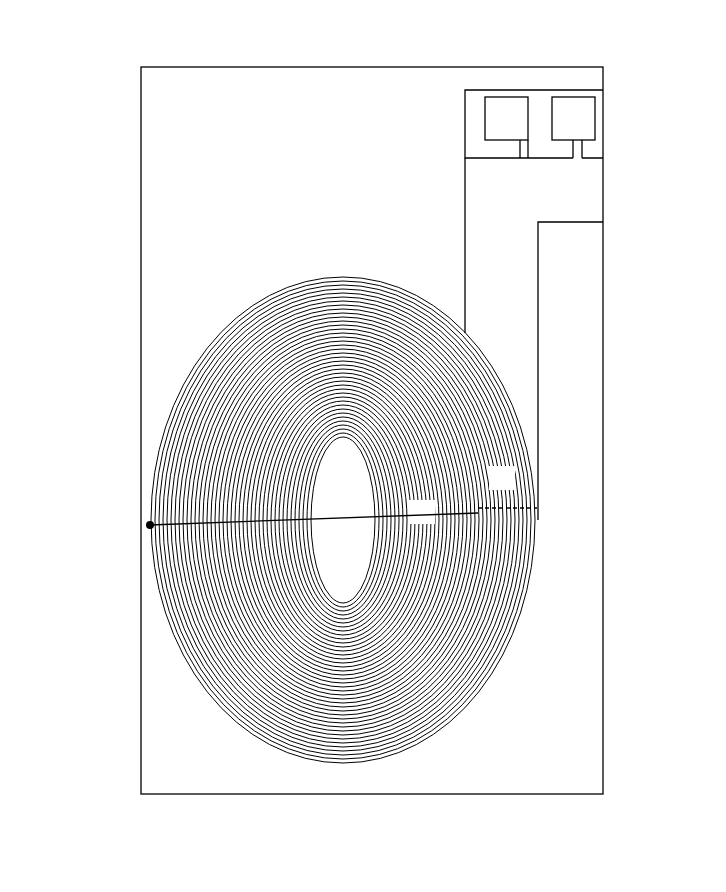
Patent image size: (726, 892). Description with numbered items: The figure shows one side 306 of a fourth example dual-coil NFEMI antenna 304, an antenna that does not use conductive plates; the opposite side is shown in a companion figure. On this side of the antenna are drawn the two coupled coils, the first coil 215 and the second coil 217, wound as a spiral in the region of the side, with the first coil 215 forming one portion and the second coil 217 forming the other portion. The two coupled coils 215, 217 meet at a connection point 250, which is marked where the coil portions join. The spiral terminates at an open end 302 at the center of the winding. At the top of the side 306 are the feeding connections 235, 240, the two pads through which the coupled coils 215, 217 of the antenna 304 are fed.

The dual-coil NFEMI antenna 304 is at (110, 75).
The one side of the antenna 306 is at (167, 192).
The feeding connection 240 is at (500, 110).
The feeding connection 235 is at (583, 122).
The coupled coil L1 215 is at (500, 464).
The coupled coil L2 217 is at (437, 513).
The open end 302 is at (150, 525).
The connection point 250 is at (479, 512).